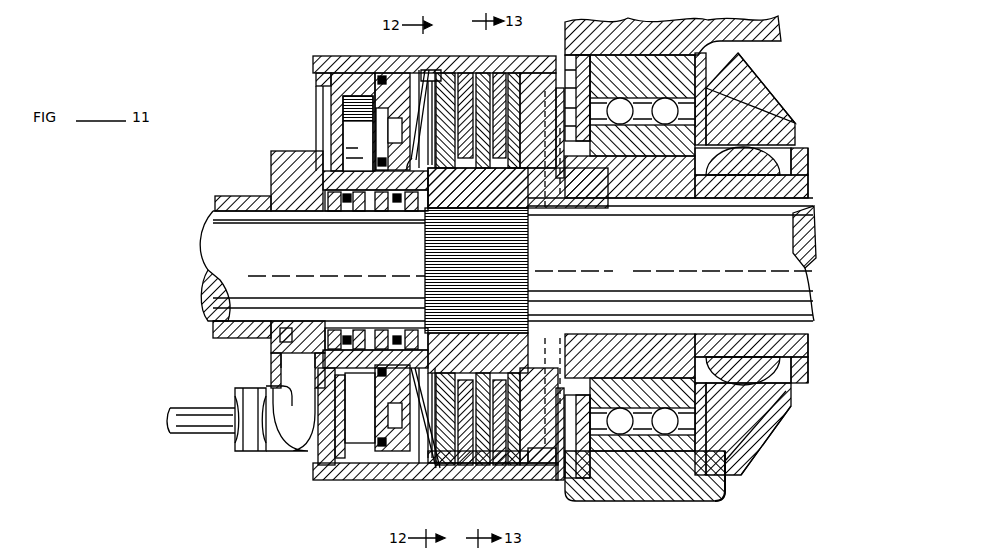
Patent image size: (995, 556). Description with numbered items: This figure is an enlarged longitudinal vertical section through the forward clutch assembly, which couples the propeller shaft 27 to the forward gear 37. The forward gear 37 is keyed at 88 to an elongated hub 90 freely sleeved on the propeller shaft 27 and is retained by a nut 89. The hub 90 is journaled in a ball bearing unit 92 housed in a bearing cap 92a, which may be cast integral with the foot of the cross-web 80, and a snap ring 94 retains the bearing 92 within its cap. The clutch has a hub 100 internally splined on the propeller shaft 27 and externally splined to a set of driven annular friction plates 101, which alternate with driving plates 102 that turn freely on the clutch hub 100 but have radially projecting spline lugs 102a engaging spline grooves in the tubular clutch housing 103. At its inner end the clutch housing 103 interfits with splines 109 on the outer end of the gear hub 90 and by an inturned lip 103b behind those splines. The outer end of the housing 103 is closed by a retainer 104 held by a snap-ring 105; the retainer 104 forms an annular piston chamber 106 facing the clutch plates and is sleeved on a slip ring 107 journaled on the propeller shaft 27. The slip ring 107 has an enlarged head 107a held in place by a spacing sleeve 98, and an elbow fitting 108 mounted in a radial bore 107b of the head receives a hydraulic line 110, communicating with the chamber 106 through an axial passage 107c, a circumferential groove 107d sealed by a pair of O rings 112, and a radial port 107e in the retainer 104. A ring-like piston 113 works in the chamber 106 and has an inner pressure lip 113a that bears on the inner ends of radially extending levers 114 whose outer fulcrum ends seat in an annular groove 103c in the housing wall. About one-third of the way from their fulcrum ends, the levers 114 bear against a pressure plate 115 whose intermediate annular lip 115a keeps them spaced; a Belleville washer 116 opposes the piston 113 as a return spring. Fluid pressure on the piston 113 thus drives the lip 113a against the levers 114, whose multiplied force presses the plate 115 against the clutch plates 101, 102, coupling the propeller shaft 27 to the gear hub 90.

The propeller shaft 27 is at (210, 247).
The forward gear 37 is at (742, 72).
The cross-web 80 is at (773, 33).
The key 88 is at (740, 192).
The nut 89 is at (793, 134).
The elongated hub 90 is at (640, 192).
The ball bearing unit 92 is at (598, 192).
The bearing cap 92a is at (702, 494).
The snap ring 94 is at (590, 494).
The spacing sleeve 98 is at (217, 188).
The clutch hub 100 is at (418, 205).
The driven annular friction plates 101 is at (456, 66).
The driving plates 102 is at (475, 66).
The spline lugs 102a is at (520, 65).
The tubular clutch housing 103 is at (345, 55).
The inturned lip 103b is at (550, 472).
The annular groove 103c is at (444, 472).
The retainer 104 is at (330, 100).
The snap-ring 105 is at (312, 71).
The annular piston chamber 106 is at (345, 123).
The slip ring 107 is at (292, 203).
The enlarged head 107a is at (275, 160).
The radial bore 107b is at (268, 343).
The axial passage 107c is at (324, 322).
The circumferential groove 107d is at (392, 322).
The radial port 107e is at (350, 322).
The elbow fitting 108 is at (283, 425).
The splines 109 is at (530, 472).
The hydraulic line 110 is at (204, 402).
The O rings 112 is at (290, 322).
The ring-like piston 113 is at (360, 66).
The inner pressure lip 113a is at (315, 430).
The levers 114 is at (417, 62).
The pressure plate 115 is at (424, 62).
The intermediate annular lip 115a is at (420, 455).
The Belleville washer 116 is at (353, 447).